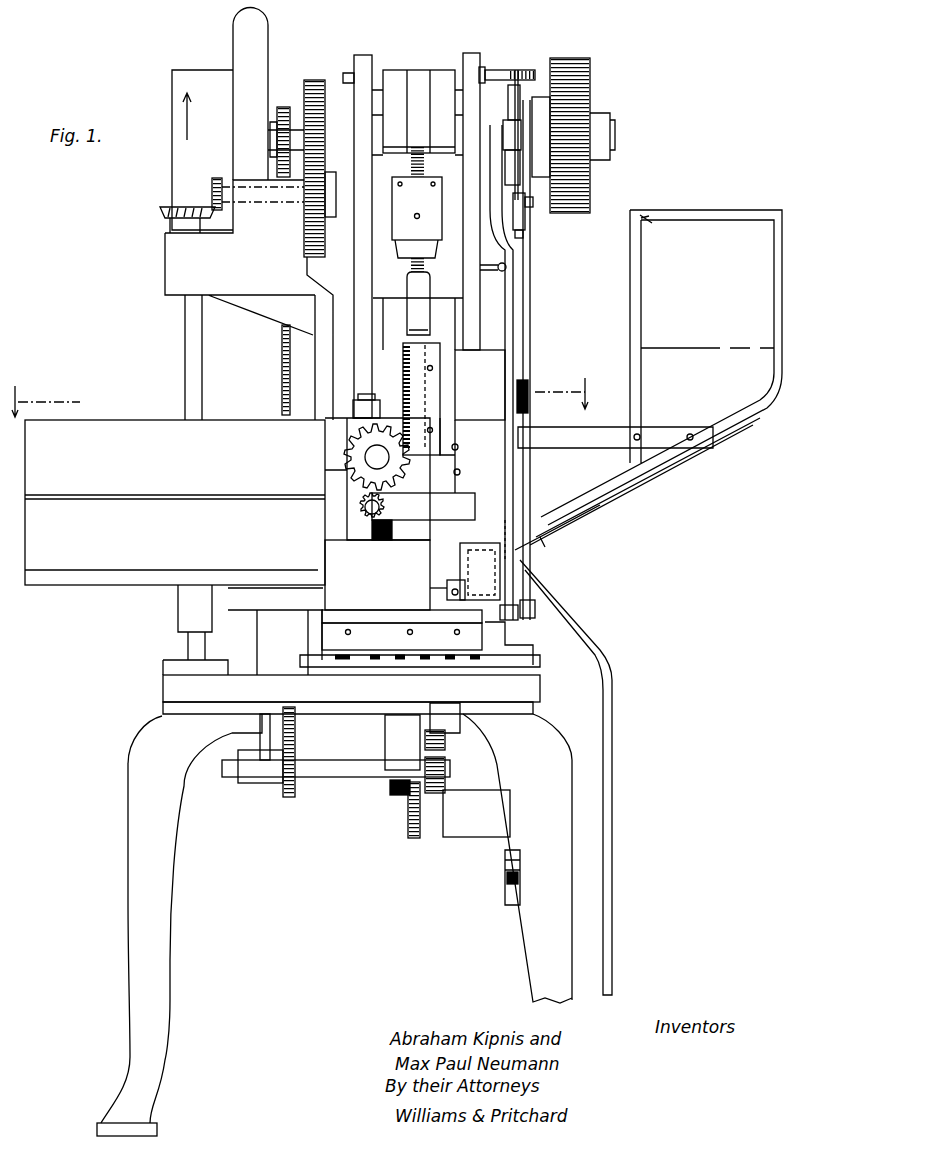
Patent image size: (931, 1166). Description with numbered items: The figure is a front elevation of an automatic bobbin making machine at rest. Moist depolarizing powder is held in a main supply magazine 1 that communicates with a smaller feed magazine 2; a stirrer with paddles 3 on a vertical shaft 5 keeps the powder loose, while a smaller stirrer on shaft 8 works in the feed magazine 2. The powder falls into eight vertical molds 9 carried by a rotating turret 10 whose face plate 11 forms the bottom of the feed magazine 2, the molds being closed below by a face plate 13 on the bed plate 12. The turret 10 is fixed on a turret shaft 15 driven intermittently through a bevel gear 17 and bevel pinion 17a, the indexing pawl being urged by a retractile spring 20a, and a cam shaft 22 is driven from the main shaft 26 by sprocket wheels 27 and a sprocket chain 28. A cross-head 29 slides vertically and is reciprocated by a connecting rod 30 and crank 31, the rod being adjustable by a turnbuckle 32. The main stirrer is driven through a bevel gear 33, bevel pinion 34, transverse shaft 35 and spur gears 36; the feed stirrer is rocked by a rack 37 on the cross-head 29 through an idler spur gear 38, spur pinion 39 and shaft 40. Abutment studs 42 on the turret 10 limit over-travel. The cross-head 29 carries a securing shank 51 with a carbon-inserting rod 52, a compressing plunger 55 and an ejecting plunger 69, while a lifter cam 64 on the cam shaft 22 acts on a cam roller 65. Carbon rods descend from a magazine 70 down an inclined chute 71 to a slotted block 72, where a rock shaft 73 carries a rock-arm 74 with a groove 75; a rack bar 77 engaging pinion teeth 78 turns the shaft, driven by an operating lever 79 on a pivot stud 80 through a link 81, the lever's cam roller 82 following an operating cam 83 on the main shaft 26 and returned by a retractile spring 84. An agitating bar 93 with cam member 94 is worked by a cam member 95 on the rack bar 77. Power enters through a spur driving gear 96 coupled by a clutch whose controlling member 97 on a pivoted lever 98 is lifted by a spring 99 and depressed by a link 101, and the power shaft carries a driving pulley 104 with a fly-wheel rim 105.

The main supply magazine 1 is at (132, 430).
The feed magazine 2 is at (312, 612).
The stirrer wings or paddles 3 is at (305, 393).
The stirrer shaft 5 is at (186, 350).
The stirrer operating shaft 8 is at (366, 395).
The molds 9 is at (470, 660).
The turret 10 is at (368, 675).
The face plate 11 is at (360, 610).
The bed plate 12 is at (533, 698).
The face plate 13 is at (533, 658).
The turret shaft 15 is at (385, 782).
The bevel gear 17 is at (412, 838).
The bevel pinion 17a is at (395, 795).
The retractile spring 20a is at (505, 868).
The cam shaft 22 is at (325, 760).
The main shaft or crank-shaft 26 is at (268, 137).
The sprocket wheels 27 is at (284, 107).
The sprocket chain 28 is at (282, 355).
The cross-head 29 is at (455, 370).
The connecting rod 30 is at (420, 120).
The crank 31 is at (400, 70).
The turnbuckle 32 is at (438, 240).
The bevel gear 33 is at (165, 207).
The bevel pinion 34 is at (218, 178).
The transverse shaft 35 is at (250, 203).
The spur gears 36 is at (315, 80).
The rack 37 is at (403, 368).
The spur gear 38 is at (346, 456).
The spur pinion 39 is at (362, 508).
The shaft 40 is at (366, 517).
The abutment studs 42 is at (345, 633).
The securing shank 51 is at (458, 445).
The carbon-inserting rod 52 is at (460, 472).
The carbon-positioning and compressing plunger 55 is at (448, 447).
The lifter cam 64 is at (445, 788).
The cam roller 65 is at (445, 740).
The ejecting plunger 69 is at (386, 538).
The magazine 70 is at (661, 367).
The inclined chute 71 is at (620, 478).
The slotted block 72 is at (468, 560).
The rock shaft 73 is at (481, 572).
The rock-arm 74 is at (430, 588).
The carbon-receiving groove 75 is at (455, 588).
The rack bar 77 is at (290, 797).
The pinion teeth 78 is at (540, 584).
The operating lever 79 is at (512, 315).
The pivot stud 80 is at (527, 380).
The link 81 is at (530, 618).
The cam roller 82 is at (503, 70).
The operating cam 83 is at (520, 90).
The retractile spring 84 is at (500, 272).
The agitating bar 93 is at (560, 505).
The cam member 94 is at (535, 505).
The cam member 95 is at (507, 520).
The spur driving gear 96 is at (590, 70).
The clutch-controlling member 97 is at (533, 202).
The pivoted lever 98 is at (523, 236).
The retractile spring 99 is at (517, 70).
The link 101 is at (612, 713).
The driving pulley 104 is at (218, 70).
The rim 105 is at (268, 40).